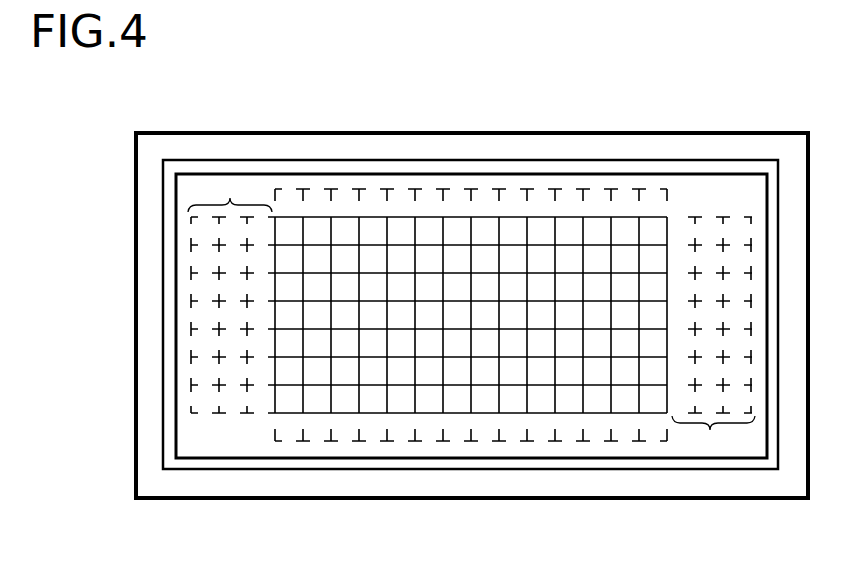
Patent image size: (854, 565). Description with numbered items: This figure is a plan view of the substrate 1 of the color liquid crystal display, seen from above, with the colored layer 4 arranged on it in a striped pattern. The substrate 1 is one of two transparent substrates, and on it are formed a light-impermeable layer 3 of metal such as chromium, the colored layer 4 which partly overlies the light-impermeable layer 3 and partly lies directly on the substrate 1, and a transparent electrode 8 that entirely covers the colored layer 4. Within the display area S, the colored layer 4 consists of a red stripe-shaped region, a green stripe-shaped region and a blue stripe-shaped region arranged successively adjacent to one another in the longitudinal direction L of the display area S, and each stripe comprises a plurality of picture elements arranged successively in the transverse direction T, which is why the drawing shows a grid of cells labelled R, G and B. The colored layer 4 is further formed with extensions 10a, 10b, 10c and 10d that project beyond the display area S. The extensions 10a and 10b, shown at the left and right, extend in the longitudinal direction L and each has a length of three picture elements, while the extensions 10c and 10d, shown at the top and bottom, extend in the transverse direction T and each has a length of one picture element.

The substrate 1 is at (150, 195).
The light-impermeable layer 3 is at (164, 241).
The colored layer 4 is at (629, 223).
The transparent electrode 8 is at (735, 191).
The extension 10a is at (230, 198).
The extension 10b is at (710, 430).
The extension 10c is at (668, 196).
The extension 10d is at (277, 432).
The display area S is at (541, 212).
The longitudinal direction L is at (477, 103).
The transverse direction T is at (105, 280).